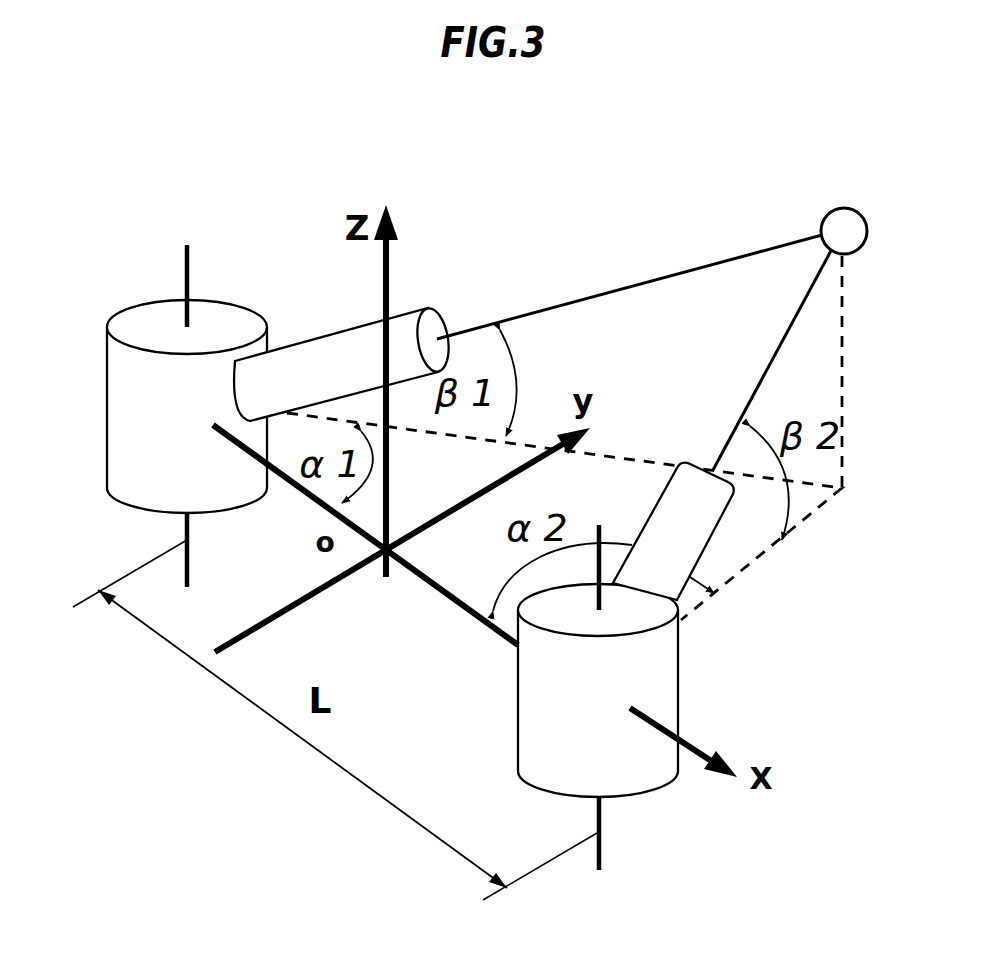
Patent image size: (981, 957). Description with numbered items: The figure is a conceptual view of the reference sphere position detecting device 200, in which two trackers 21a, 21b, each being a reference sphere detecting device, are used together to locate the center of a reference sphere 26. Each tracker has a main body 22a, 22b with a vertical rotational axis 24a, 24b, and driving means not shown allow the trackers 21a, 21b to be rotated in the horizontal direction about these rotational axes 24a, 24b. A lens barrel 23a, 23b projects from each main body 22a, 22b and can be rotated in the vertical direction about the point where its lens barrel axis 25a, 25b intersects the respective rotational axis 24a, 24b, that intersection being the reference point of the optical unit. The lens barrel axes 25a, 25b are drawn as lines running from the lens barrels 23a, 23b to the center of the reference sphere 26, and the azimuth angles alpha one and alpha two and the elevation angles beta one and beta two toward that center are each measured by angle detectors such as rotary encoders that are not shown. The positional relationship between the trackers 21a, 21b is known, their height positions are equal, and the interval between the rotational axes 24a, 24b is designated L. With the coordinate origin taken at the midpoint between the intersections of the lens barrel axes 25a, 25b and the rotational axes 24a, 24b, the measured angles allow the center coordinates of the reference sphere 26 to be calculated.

The reference sphere position detecting device 200 is at (788, 120).
The tracker 21a is at (86, 336).
The main body 22a is at (107, 428).
The lens barrel 23a is at (353, 325).
The rotational axis 24a is at (185, 262).
The tracker 21b is at (760, 697).
The main body 22b is at (679, 713).
The lens barrel 23b is at (648, 520).
The rotational axis 24b is at (601, 850).
The lens barrel axis 25a is at (652, 280).
The lens barrel axis 25b is at (803, 305).
The reference sphere 26 is at (867, 225).